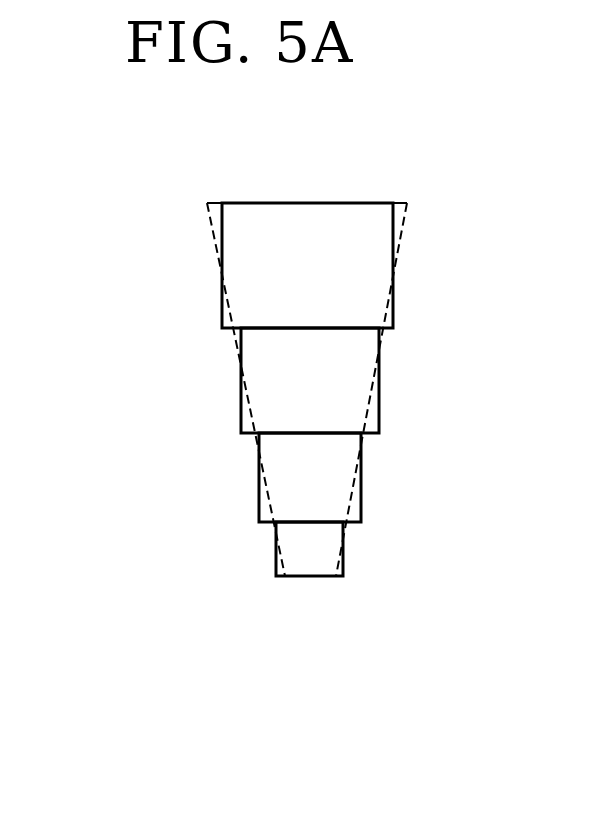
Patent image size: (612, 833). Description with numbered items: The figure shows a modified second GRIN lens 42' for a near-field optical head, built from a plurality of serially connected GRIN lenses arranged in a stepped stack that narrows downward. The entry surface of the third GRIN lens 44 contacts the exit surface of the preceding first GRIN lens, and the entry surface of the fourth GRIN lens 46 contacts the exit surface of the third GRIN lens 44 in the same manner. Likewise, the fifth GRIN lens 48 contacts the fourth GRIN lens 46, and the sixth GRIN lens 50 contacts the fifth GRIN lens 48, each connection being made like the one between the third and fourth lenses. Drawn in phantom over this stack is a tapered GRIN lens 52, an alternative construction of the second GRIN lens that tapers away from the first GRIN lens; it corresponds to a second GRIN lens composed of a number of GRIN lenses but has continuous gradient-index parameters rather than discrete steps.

The second GRIN lens 42' is at (77, 409).
The third GRIN lens 44 is at (235, 263).
The fourth GRIN lens 46 is at (250, 380).
The fifth GRIN lens 48 is at (272, 481).
The sixth GRIN lens 50 is at (290, 548).
The tapered GRIN lens 52 is at (403, 230).